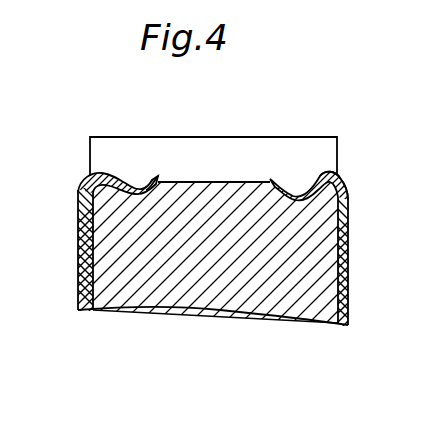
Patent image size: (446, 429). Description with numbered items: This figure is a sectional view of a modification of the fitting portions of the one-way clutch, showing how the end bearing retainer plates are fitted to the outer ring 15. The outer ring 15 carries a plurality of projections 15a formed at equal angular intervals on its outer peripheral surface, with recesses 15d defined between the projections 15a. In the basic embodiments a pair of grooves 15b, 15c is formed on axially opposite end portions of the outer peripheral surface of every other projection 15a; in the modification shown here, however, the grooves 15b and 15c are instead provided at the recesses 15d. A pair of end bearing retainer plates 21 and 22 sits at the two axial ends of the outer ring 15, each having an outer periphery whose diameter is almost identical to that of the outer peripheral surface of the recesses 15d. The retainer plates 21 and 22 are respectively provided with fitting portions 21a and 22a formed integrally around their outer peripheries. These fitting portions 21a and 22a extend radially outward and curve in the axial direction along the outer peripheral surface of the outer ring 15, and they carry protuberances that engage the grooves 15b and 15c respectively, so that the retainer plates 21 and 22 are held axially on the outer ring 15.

The outer ring 15 is at (192, 283).
The projections 15a is at (207, 137).
The groove 15b is at (123, 178).
The groove 15c is at (298, 185).
The recesses 15d is at (205, 182).
The end bearing retainer plate 21 is at (80, 281).
The fitting portions 21a is at (148, 177).
The end bearing retainer plate 22 is at (346, 291).
The fitting portions 22a is at (287, 188).